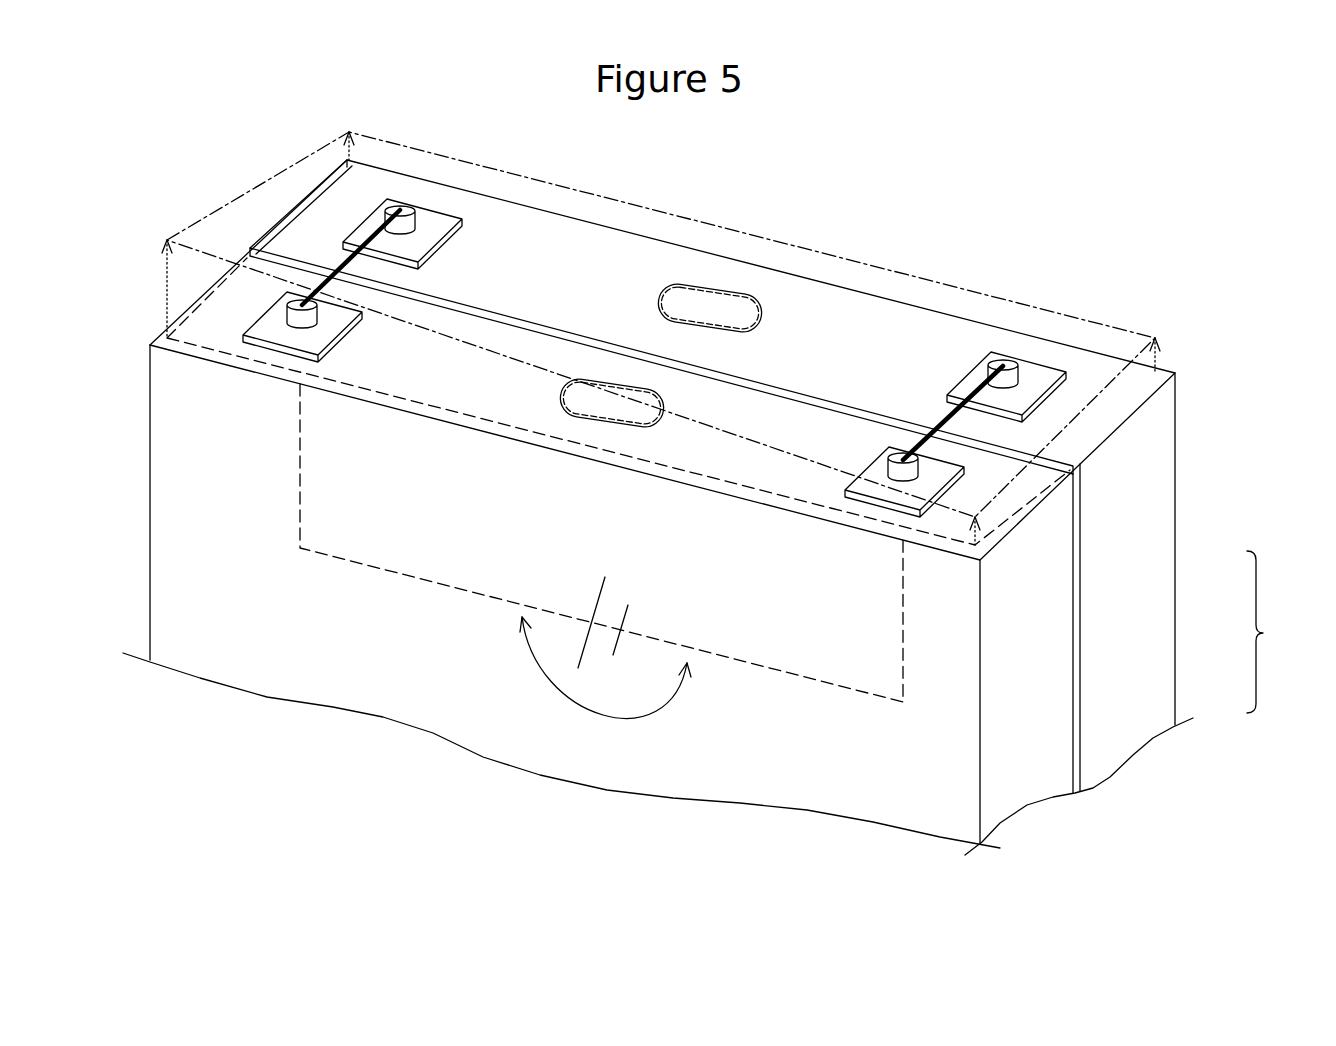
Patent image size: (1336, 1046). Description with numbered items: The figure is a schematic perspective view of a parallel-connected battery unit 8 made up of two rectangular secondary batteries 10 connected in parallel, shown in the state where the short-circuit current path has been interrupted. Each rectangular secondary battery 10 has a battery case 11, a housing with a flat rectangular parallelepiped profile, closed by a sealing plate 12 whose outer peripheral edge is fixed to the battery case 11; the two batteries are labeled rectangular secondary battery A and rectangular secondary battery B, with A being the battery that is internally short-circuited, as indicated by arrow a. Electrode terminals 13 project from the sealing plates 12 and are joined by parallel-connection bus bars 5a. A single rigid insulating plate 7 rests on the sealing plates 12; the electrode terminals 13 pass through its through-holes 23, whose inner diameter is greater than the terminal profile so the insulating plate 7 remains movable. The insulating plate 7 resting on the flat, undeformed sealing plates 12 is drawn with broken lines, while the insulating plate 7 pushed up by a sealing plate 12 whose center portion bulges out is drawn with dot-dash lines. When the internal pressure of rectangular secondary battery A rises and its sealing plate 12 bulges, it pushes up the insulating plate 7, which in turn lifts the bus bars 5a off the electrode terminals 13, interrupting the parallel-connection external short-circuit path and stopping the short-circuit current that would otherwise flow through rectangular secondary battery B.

The parallel-connection bus bar 5a is at (325, 245).
The insulating plate 7 is at (374, 386).
The parallel-connected battery unit 8 is at (1265, 632).
The rectangular secondary battery 10 is at (1128, 578).
The battery case 11 is at (1146, 505).
The sealing plate 12 is at (1118, 413).
The electrode terminal 13 is at (300, 303).
The through-hole 23 is at (284, 330).
The arrow indicating internal short-circuit a is at (605, 677).
The rectangular secondary battery A is at (1028, 748).
The rectangular secondary battery B is at (1122, 650).